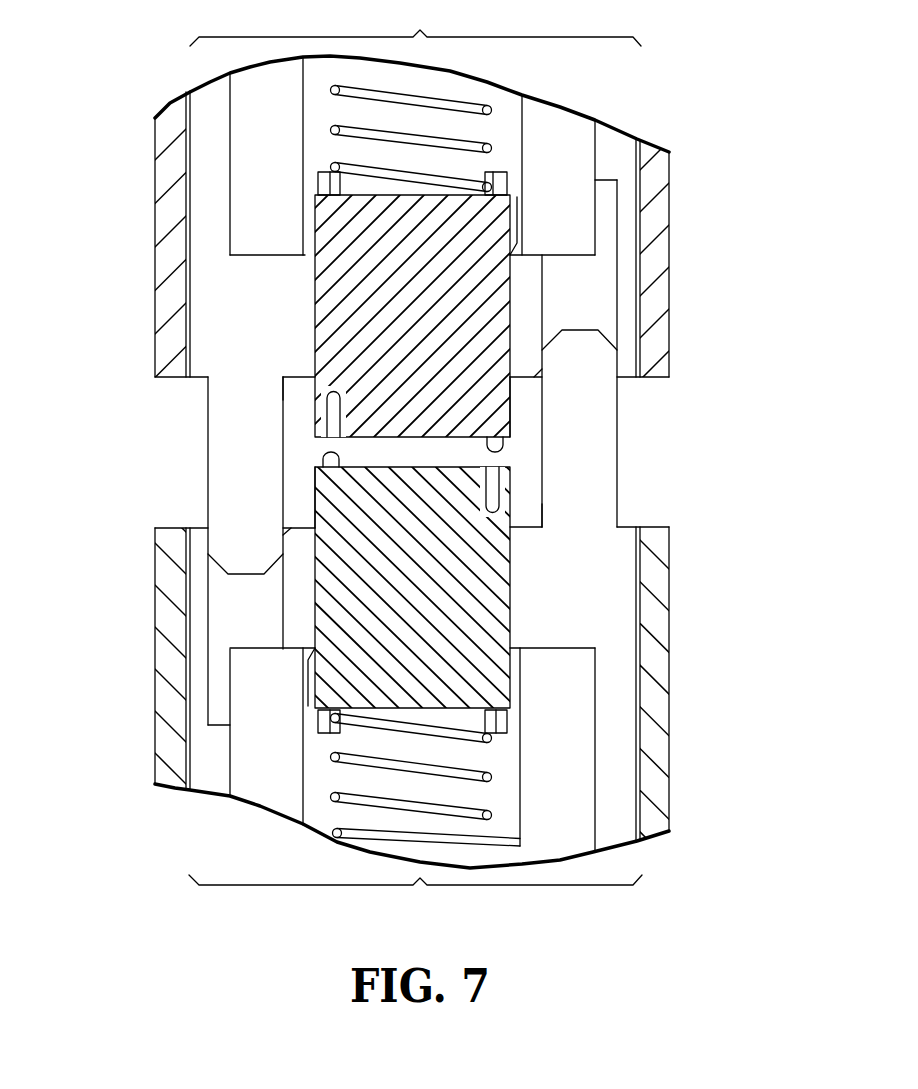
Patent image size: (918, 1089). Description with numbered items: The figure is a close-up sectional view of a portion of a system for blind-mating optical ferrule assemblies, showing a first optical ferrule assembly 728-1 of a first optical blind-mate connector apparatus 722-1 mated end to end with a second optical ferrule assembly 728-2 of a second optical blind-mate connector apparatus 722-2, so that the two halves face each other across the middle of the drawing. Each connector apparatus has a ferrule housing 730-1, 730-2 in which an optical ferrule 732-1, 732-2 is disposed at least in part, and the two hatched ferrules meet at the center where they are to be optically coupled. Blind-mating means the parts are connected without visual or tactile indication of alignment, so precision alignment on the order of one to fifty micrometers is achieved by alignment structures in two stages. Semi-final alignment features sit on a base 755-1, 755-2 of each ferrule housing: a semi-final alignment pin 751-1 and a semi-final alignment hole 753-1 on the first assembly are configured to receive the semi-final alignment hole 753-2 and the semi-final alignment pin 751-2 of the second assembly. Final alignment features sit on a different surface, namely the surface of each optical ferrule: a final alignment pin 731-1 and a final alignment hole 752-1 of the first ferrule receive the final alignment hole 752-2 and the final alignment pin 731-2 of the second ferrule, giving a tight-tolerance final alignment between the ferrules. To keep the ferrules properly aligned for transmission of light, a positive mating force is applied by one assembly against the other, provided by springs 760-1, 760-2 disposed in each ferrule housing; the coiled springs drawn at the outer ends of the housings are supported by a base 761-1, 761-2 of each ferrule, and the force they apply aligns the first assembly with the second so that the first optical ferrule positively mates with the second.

The second optical ferrule assembly 728-2 is at (415, 25).
The first optical ferrule assembly 728-1 is at (415, 899).
The second optical blind-mate connector apparatus 722-2 is at (116, 167).
The first optical blind-mate connector apparatus 722-1 is at (118, 757).
The ferrule housing 730-2 is at (187, 238).
The ferrule housing 730-1 is at (640, 572).
The semi-final alignment hole 753-2 is at (622, 287).
The semi-final alignment hole 753-1 is at (205, 642).
The semi-final alignment pin 751-2 is at (208, 405).
The semi-final alignment pin 751-1 is at (620, 470).
The base 755-2 is at (302, 372).
The base 755-1 is at (522, 530).
The final alignment hole 752-2 is at (320, 417).
The final alignment hole 752-1 is at (500, 493).
The optical ferrule 732-2 is at (507, 406).
The optical ferrule 732-1 is at (316, 490).
The final alignment pin 731-2 is at (500, 446).
The final alignment pin 731-1 is at (332, 457).
The spring 760-2 is at (500, 122).
The spring 760-1 is at (505, 806).
The base 761-2 is at (447, 227).
The base 761-1 is at (373, 707).